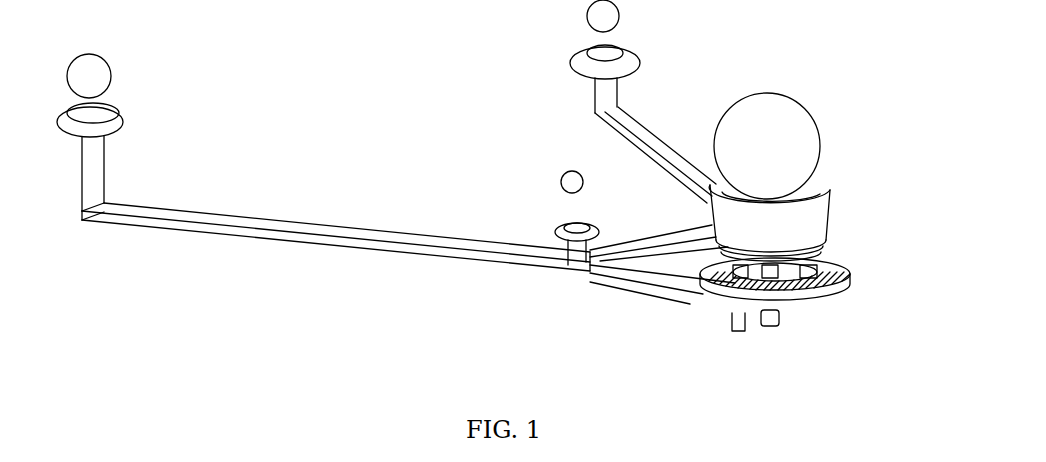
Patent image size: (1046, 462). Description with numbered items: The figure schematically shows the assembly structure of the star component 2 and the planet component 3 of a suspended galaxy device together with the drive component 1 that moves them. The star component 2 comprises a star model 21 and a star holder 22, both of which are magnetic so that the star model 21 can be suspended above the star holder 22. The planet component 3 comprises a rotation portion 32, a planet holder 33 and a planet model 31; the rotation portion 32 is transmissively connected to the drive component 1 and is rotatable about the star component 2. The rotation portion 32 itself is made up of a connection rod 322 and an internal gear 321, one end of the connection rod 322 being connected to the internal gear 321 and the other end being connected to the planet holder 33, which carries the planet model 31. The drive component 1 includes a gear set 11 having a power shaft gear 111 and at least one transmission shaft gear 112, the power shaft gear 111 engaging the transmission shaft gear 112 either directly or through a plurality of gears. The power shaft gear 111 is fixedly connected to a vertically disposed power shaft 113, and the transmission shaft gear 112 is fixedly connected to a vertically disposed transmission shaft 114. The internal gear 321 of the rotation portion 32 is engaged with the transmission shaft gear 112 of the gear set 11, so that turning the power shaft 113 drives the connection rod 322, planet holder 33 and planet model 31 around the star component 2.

The drive component 1 is at (773, 312).
The gear set 11 is at (762, 290).
The power shaft gear 111 is at (817, 293).
The transmission shaft gear 112 is at (727, 303).
The power shaft 113 is at (783, 320).
The transmission shaft 114 is at (733, 331).
The star component 2 is at (818, 162).
The star model 21 is at (778, 123).
The star holder 22 is at (802, 215).
The planet component 3 is at (247, 218).
The planet model 31 is at (100, 67).
The rotation portion 32 is at (325, 237).
The internal gear 321 is at (703, 293).
The connection rod 322 is at (408, 238).
The planet holder 33 is at (103, 128).